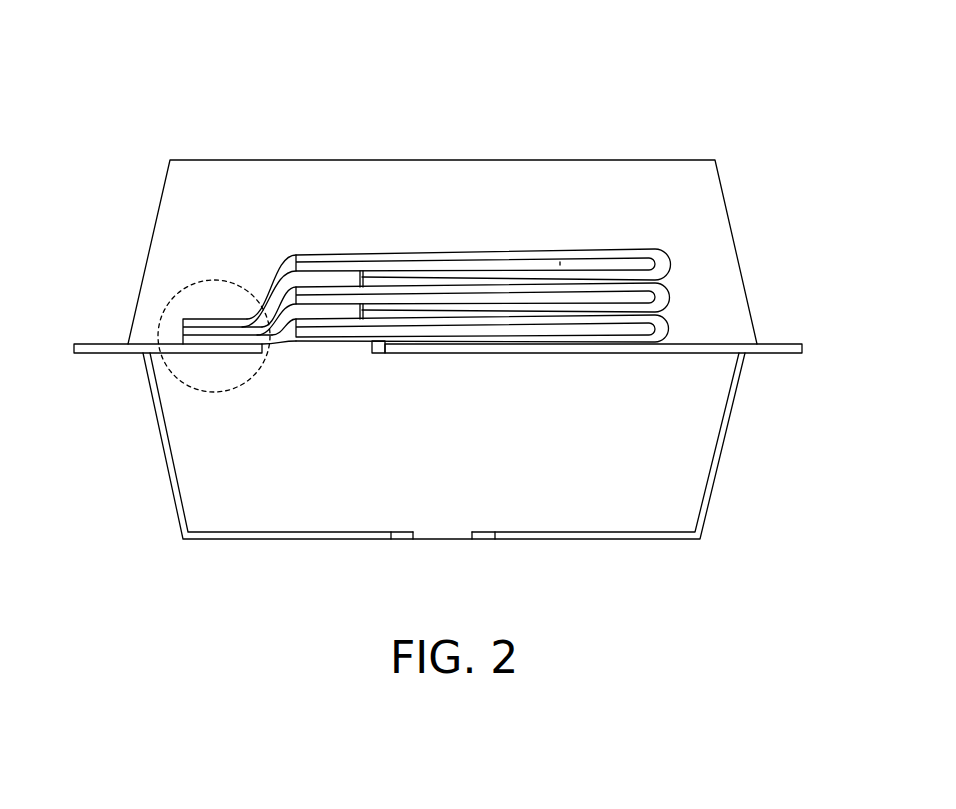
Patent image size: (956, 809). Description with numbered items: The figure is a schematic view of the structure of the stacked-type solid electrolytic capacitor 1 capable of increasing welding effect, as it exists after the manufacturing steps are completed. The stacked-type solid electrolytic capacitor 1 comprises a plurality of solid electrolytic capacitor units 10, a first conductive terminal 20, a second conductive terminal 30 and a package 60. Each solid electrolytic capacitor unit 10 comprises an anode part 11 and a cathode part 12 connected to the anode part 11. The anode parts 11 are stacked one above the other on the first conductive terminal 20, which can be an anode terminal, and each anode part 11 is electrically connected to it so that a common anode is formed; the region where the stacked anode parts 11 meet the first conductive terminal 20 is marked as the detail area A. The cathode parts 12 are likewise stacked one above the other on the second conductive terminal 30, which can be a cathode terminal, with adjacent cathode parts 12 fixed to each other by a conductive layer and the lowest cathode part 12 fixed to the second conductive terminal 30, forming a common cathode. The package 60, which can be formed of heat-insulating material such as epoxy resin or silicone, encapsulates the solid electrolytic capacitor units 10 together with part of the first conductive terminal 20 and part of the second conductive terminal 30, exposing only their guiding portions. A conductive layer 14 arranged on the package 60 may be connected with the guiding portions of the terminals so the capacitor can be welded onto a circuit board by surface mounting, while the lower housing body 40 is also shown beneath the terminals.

The stacked-type solid electrolytic capacitor 1 is at (84, 52).
The solid electrolytic capacitor unit 10 is at (339, 279).
The anode part 11 is at (205, 322).
The cathode part 12 is at (560, 265).
The conductive layer 14 is at (381, 277).
The first conductive terminal 20 is at (102, 336).
The second conductive terminal 30 is at (786, 336).
The housing body 40 is at (620, 548).
The package 60 is at (611, 152).
The detail region A is at (197, 391).